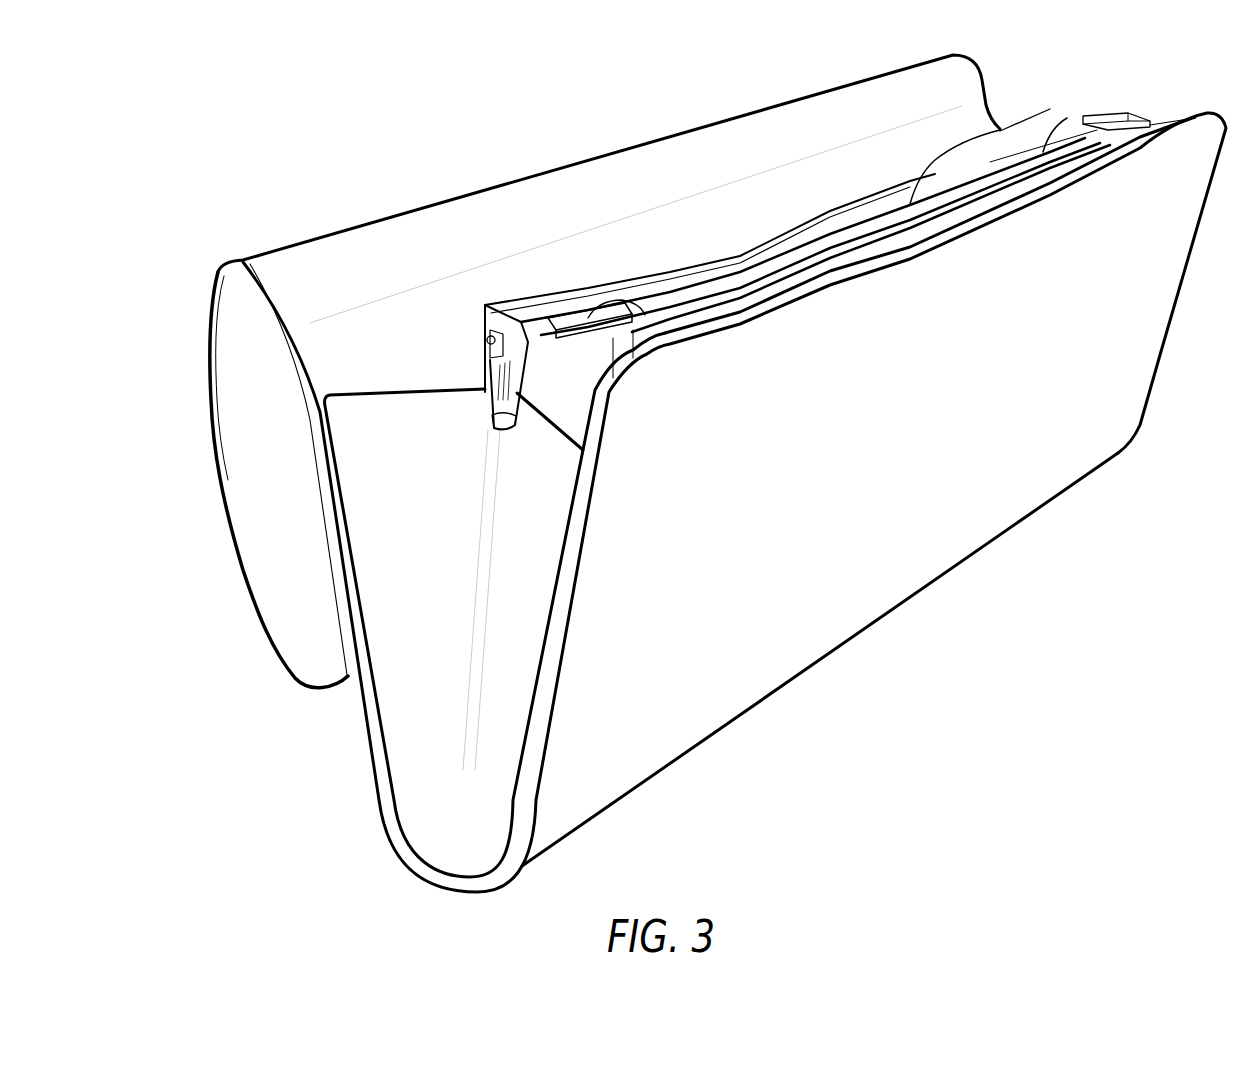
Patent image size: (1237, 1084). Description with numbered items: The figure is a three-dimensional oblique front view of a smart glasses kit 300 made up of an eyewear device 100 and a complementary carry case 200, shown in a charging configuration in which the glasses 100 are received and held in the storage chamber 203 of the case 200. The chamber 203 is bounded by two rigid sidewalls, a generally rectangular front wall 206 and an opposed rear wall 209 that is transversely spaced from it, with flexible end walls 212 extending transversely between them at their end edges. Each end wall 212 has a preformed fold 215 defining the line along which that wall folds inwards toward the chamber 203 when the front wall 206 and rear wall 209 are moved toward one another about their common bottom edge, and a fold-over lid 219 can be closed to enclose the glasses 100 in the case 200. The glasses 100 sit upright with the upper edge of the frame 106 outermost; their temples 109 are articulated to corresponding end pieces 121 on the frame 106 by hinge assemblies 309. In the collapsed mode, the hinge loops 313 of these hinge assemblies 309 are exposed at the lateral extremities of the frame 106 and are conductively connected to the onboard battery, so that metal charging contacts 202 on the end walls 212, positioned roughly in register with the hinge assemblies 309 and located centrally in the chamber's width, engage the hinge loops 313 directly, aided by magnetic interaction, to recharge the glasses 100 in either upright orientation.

The eyewear device 100 is at (634, 366).
The frame 106 is at (930, 203).
The temples 109 is at (820, 233).
The end pieces 121 is at (580, 383).
The case 200 is at (734, 502).
The charging contacts 202 is at (518, 413).
The chamber 203 is at (804, 290).
The front wall 206 is at (1025, 414).
The rear wall 209 is at (837, 200).
The end walls 212 is at (446, 617).
The preformed fold 215 is at (470, 718).
The fold-over lid 219 is at (263, 550).
The smart glasses kit 300 is at (700, 468).
The hinge assemblies 309 is at (507, 312).
The hinge loops 313 is at (510, 378).